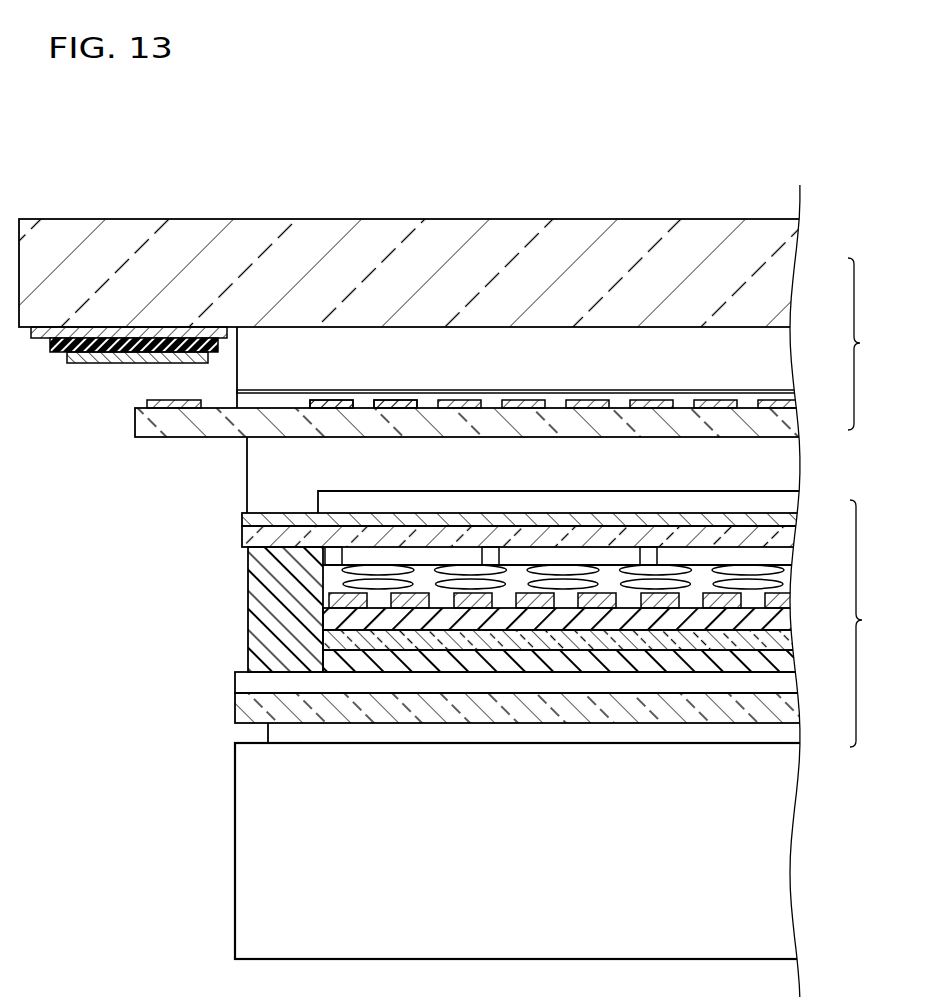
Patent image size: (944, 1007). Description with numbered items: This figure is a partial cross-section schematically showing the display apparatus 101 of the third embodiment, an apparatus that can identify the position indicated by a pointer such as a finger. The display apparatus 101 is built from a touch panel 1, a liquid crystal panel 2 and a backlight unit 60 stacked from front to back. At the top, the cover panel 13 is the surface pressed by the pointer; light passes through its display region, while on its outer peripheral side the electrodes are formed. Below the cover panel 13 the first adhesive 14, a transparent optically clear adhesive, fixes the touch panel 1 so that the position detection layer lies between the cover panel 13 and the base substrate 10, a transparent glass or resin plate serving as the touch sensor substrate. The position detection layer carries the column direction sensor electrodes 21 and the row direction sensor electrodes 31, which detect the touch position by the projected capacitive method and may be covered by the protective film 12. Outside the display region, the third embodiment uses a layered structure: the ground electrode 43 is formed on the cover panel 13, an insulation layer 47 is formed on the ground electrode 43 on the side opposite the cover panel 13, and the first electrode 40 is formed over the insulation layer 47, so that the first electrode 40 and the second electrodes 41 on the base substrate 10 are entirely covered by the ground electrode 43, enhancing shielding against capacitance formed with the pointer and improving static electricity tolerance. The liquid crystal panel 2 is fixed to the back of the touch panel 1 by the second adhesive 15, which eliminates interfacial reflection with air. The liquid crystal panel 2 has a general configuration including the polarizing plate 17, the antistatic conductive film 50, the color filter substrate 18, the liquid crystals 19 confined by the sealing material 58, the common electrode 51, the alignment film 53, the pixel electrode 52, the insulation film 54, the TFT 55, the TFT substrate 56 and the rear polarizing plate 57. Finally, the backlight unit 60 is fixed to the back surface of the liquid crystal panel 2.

The display apparatus 101 is at (100, 143).
The cover panel 13 is at (777, 272).
The first adhesive 14 is at (777, 355).
The protective film 12 is at (790, 393).
The base substrate 10 is at (790, 420).
The touch panel 1 is at (865, 344).
The row direction sensor electrode 31 is at (335, 404).
The column direction sensor electrode 21 is at (398, 404).
The ground electrode 43 is at (38, 338).
The insulation layer 47 is at (58, 352).
The first electrode 40 is at (114, 363).
The second electrode 41 is at (181, 400).
The second adhesive 15 is at (788, 462).
The polarizing plate 17 is at (790, 500).
The antistatic conductive film 50 is at (792, 519).
The color filter substrate 18 is at (790, 537).
The liquid crystals 19 is at (787, 568).
The common electrode 51 is at (780, 603).
The alignment film 53 is at (785, 617).
The pixel electrode 52 is at (785, 640).
The insulation film 54 is at (787, 660).
The TFT 55 is at (788, 685).
The TFT substrate 56 is at (788, 710).
The polarizing plate 57 is at (788, 735).
The sealing material 58 is at (247, 610).
The backlight unit 60 is at (768, 837).
The liquid crystal panel 2 is at (866, 623).